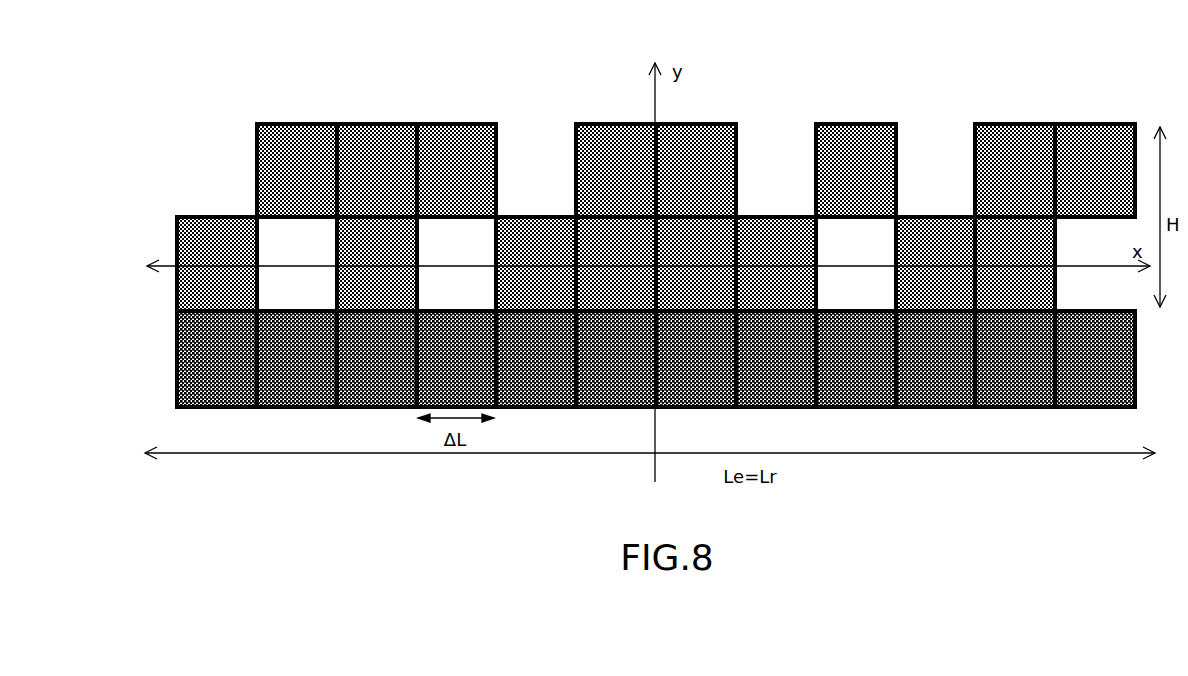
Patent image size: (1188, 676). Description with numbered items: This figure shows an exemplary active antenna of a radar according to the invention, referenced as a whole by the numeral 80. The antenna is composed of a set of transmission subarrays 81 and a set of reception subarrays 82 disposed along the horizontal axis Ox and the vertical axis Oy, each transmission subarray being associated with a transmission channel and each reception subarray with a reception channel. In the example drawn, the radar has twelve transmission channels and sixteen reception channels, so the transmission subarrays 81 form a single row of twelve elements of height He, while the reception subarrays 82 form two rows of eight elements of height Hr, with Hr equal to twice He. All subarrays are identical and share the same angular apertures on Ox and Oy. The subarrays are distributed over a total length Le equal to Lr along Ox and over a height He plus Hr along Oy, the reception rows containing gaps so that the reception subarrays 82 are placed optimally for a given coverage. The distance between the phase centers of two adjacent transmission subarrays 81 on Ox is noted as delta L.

The antenna array 80 is at (205, 131).
The transmission subarrays 81 is at (147, 311).
The reception subarrays 82 is at (147, 125).